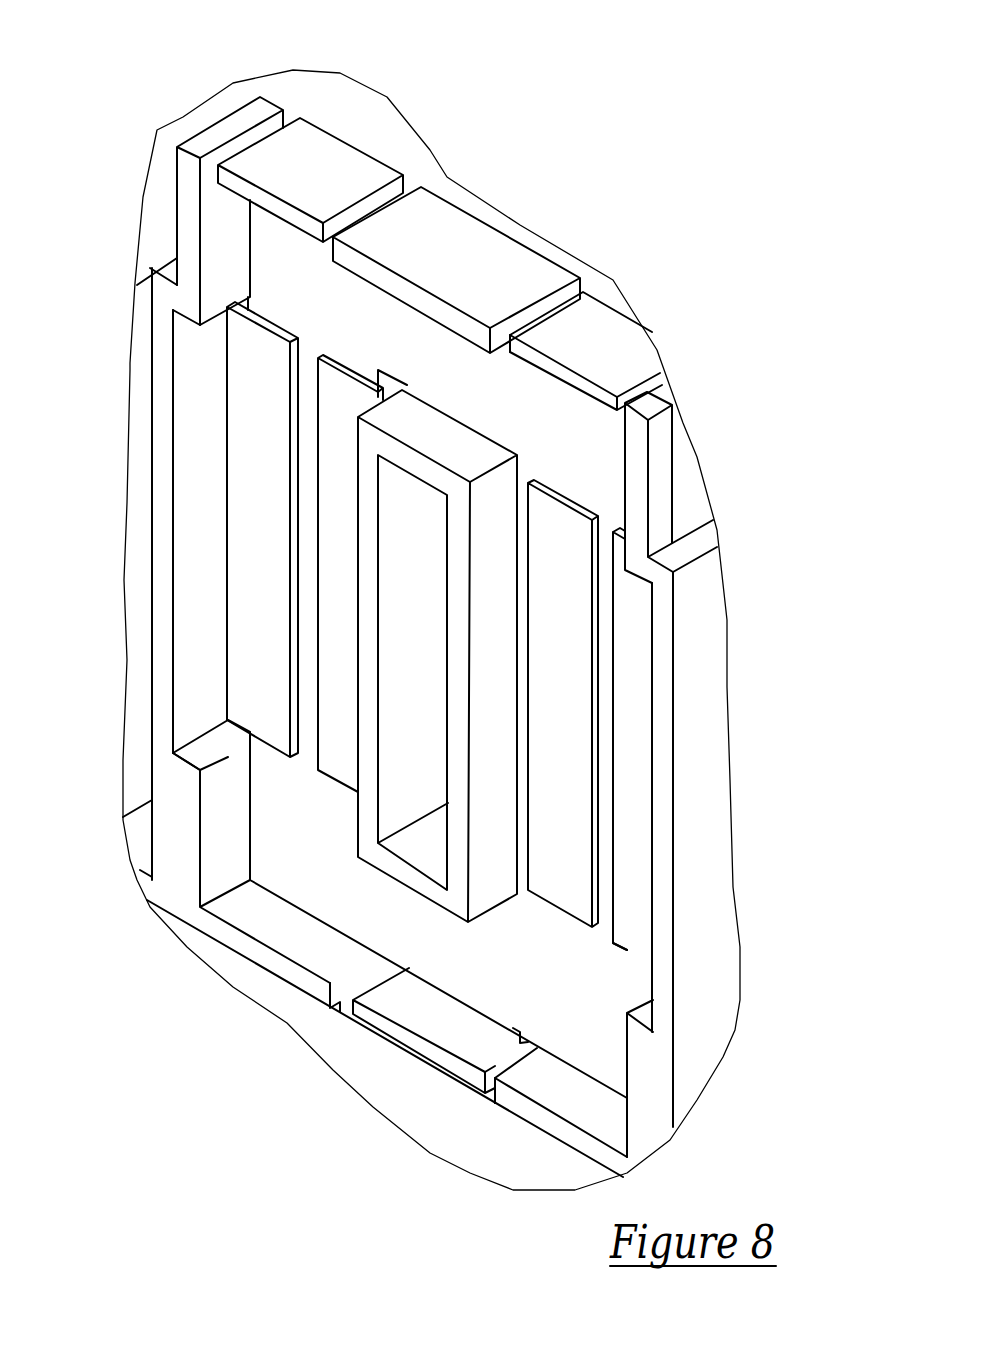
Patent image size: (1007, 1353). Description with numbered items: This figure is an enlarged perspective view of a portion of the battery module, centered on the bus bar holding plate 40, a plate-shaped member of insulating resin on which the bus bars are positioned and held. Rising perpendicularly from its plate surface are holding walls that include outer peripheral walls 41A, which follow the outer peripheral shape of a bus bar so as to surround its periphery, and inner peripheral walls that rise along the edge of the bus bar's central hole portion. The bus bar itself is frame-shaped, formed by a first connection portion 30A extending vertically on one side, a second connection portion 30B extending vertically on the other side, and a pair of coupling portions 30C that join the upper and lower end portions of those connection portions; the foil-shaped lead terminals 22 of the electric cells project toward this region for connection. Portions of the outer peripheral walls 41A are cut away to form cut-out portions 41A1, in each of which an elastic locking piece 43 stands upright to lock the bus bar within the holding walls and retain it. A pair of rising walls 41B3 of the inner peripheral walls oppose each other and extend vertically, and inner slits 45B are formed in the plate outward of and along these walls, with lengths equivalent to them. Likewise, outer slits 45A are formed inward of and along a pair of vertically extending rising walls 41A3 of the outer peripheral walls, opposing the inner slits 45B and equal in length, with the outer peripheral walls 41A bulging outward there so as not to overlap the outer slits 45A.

The bus bar holding plate 40 is at (112, 178).
The outer slits 45A is at (183, 222).
The elastic locking pieces 43 is at (318, 162).
The cut-out portions 41A1 is at (383, 200).
The inner slits 45B is at (393, 375).
The outer peripheral walls 41A is at (505, 273).
The coupling portions 30C is at (533, 408).
The lead terminals 22 is at (333, 503).
The rising walls 41A3 is at (200, 500).
The rising walls 41B3 is at (400, 677).
The first connection portion 30A is at (300, 800).
The second connection portion 30B is at (595, 970).